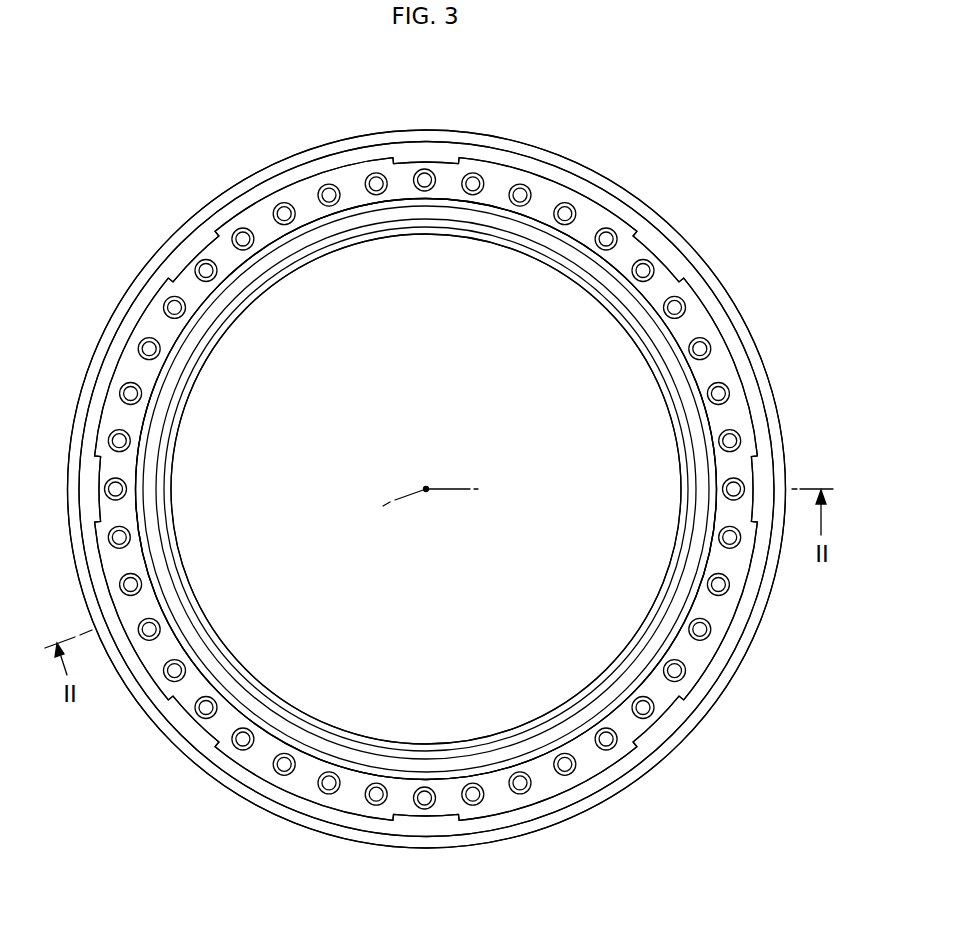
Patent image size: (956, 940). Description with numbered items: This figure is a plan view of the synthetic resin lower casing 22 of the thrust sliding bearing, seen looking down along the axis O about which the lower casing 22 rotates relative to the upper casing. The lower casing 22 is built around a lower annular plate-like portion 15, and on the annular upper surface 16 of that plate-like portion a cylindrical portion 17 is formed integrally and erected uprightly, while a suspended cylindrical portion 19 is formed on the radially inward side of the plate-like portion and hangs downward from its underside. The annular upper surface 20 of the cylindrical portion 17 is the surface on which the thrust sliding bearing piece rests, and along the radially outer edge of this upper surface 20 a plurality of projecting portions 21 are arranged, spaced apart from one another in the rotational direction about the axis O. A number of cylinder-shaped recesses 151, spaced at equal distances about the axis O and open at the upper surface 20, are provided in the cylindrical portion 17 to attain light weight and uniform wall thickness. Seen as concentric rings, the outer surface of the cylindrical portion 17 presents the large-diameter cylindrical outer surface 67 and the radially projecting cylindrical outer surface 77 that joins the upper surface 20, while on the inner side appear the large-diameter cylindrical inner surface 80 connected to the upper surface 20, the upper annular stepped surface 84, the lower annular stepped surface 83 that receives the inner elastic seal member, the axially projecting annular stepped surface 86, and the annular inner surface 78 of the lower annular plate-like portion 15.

The lower annular plate-like portion 15 is at (735, 660).
The annular upper surface 16 is at (88, 383).
The cylindrical portion 17 is at (123, 468).
The suspended cylindrical portion 19 is at (552, 710).
The annular upper surface 20 is at (305, 775).
The projecting portions 21 is at (285, 192).
The lower casing 22 is at (668, 213).
The large-diameter cylindrical outer surface 67 is at (492, 840).
The radially projecting cylindrical outer surface 77 is at (565, 183).
The annular inner surface 78 is at (440, 238).
The large-diameter cylindrical inner surface 80 is at (140, 545).
The lower annular stepped surface 83 is at (579, 279).
The upper annular stepped surface 84 is at (388, 777).
The axially projecting annular stepped surface 86 is at (307, 250).
The recesses 151 is at (170, 303).
The axis O is at (426, 489).